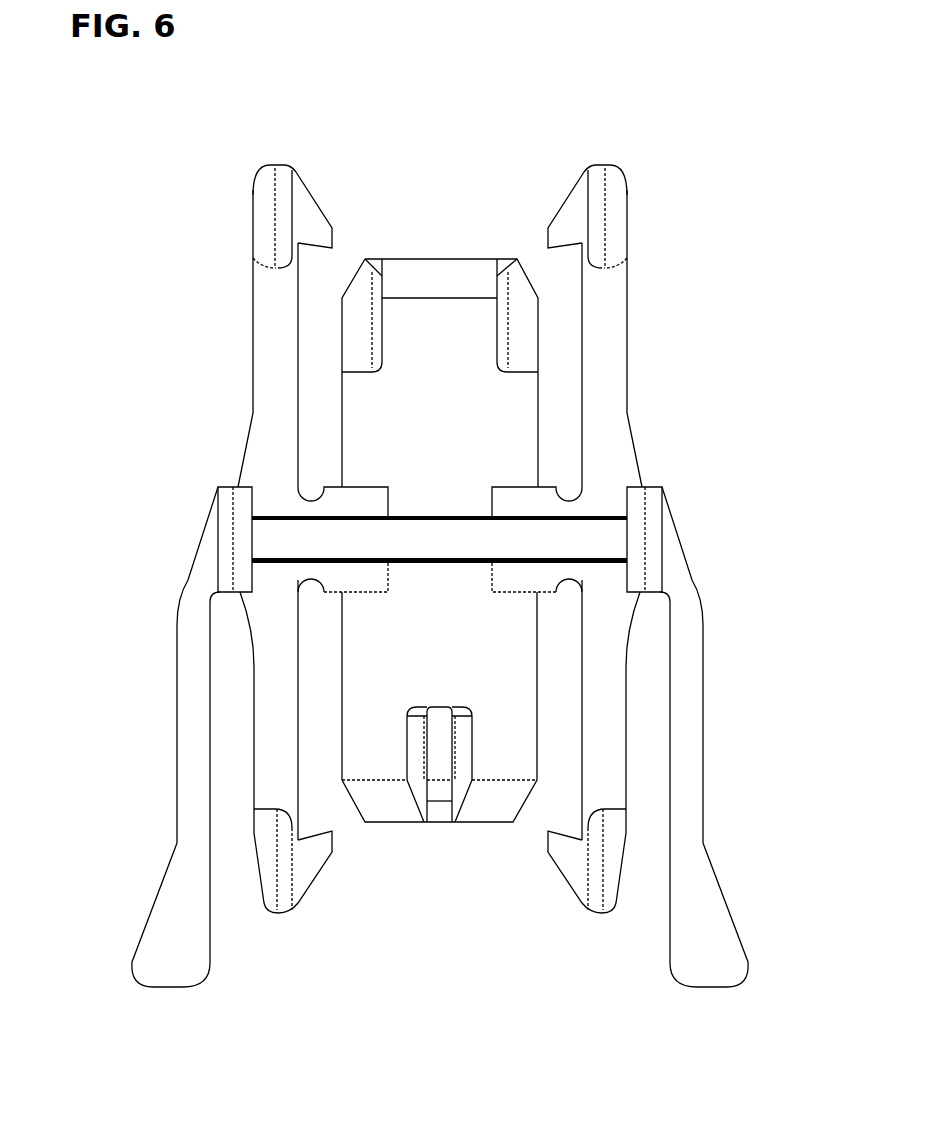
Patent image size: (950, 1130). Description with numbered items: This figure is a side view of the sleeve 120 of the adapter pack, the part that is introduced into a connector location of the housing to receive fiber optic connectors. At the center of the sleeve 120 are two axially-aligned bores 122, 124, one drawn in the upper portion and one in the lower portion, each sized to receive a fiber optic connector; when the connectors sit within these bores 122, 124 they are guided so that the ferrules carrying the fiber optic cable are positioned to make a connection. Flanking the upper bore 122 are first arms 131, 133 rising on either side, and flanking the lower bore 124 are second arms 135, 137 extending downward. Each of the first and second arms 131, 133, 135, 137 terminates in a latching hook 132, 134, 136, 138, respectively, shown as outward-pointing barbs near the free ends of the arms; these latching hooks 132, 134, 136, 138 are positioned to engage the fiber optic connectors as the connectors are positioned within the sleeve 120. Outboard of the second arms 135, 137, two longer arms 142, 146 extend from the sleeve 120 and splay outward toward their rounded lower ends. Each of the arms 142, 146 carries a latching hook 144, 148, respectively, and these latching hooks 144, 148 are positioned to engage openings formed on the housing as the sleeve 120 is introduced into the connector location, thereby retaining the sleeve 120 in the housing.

The sleeve 120 is at (664, 113).
The bore 122 is at (408, 277).
The bore 124 is at (384, 805).
The first arm 131 is at (622, 363).
The latching hook 132 is at (572, 202).
The first arm 133 is at (262, 372).
The latching hook 134 is at (310, 205).
The second arm 135 is at (615, 738).
The latching hook 136 is at (572, 870).
The second arm 137 is at (262, 748).
The latching hook 138 is at (307, 870).
The arm 142 is at (698, 726).
The latching hook 144 is at (735, 960).
The arm 146 is at (185, 732).
The latching hook 148 is at (135, 957).